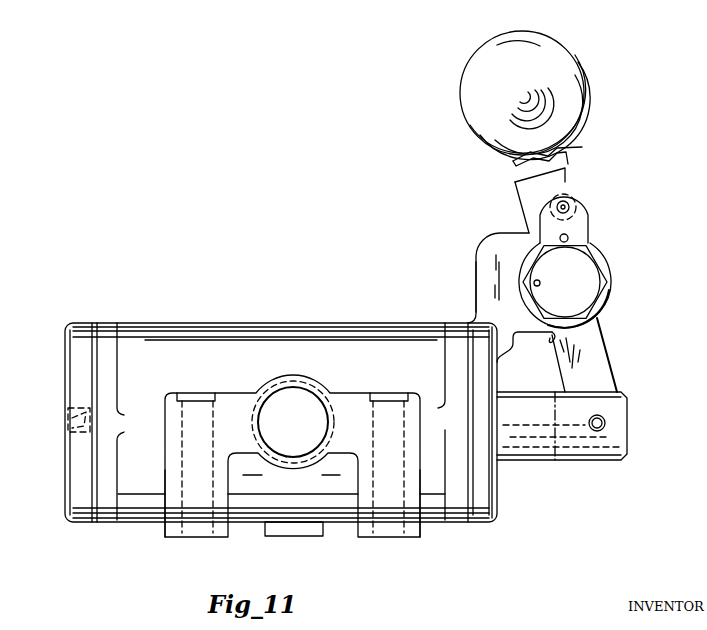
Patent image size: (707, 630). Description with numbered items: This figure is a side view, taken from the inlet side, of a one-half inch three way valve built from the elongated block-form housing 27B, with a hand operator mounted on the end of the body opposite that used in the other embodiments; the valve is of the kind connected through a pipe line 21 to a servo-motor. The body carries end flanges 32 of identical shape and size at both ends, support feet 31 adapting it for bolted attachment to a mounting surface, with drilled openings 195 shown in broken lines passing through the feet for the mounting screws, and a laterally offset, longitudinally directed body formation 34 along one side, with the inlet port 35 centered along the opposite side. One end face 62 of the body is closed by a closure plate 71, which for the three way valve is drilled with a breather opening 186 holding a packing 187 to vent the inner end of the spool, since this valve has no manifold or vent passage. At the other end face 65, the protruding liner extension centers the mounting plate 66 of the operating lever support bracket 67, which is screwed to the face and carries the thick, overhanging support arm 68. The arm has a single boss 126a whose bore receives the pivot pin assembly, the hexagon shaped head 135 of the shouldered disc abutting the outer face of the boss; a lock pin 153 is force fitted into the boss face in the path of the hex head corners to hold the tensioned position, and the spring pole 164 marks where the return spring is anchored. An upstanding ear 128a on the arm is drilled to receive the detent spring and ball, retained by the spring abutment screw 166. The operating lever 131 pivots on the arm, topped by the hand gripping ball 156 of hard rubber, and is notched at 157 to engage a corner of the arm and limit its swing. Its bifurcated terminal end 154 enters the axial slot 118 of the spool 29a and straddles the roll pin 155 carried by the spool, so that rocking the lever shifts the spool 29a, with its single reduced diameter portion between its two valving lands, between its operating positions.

The pipe line 21 is at (160, 312).
The housing 27B is at (288, 336).
The end face 65 is at (93, 350).
The end face 62 is at (472, 526).
The end flange 32 is at (103, 332).
The body formation 34 is at (250, 392).
The inlet port 35 is at (304, 400).
The support feet 31 is at (186, 538).
The slot 195 is at (178, 508).
The breather opening 186 is at (70, 413).
The packing 187 is at (70, 427).
The closure plate 71 is at (66, 500).
The mounting plate 66 is at (490, 518).
The operating lever support bracket 67 is at (474, 281).
The support arm 68 is at (504, 242).
The upstanding ear 128a is at (589, 193).
The spring abutment screw 166 is at (570, 208).
The lock pin 153 is at (569, 238).
The boss 126a is at (592, 264).
The hexagon shaped head 135 is at (606, 284).
The spring pole 164 is at (540, 282).
The operating lever 131 is at (582, 147).
The bifurcated terminal end 154 is at (604, 380).
The notch 157 is at (549, 342).
The spool 29a is at (514, 460).
The axial slot 118 is at (576, 462).
The roll pin 155 is at (603, 430).
The hand gripping ball 156 is at (566, 63).